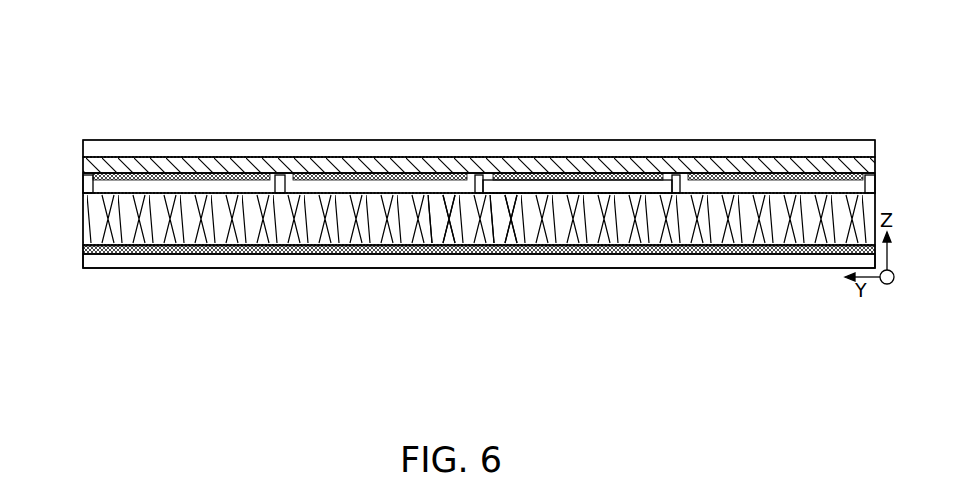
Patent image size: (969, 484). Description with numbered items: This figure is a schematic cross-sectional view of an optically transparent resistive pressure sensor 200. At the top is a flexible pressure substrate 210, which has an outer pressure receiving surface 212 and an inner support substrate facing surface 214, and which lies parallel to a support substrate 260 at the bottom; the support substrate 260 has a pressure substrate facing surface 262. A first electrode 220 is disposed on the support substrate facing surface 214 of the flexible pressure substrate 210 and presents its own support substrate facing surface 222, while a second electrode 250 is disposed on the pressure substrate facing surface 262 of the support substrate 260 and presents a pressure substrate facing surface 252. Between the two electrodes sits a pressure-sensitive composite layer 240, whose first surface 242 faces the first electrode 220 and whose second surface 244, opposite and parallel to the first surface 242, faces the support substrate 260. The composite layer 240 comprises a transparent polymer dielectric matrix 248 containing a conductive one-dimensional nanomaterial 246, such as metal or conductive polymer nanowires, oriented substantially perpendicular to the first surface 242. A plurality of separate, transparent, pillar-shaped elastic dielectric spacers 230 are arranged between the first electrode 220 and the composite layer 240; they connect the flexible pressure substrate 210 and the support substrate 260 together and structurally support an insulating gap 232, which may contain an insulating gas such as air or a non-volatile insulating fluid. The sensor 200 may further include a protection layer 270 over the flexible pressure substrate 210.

The resistive pressure sensor 200 is at (80, 56).
The flexible pressure substrate 210 is at (125, 163).
The pressure receiving surface 212 is at (182, 157).
The support substrate facing surface 214 is at (577, 170).
The first electrode 220 is at (95, 176).
The support substrate facing surface 222 is at (227, 175).
The elastic dielectric spacers 230 is at (280, 183).
The insulating gap 232 is at (497, 187).
The pressure-sensitive composite layer 240 is at (80, 222).
The first surface 242 is at (360, 195).
The second surface 244 is at (362, 245).
The conductive one-dimensional nanomaterial 246 is at (434, 225).
The transparent polymer dielectric matrix 248 is at (500, 217).
The second electrode 250 is at (203, 252).
The pressure substrate facing surface 252 is at (260, 250).
The support substrate 260 is at (622, 262).
The pressure substrate facing surface 262 is at (703, 255).
The protection layer 270 is at (660, 148).